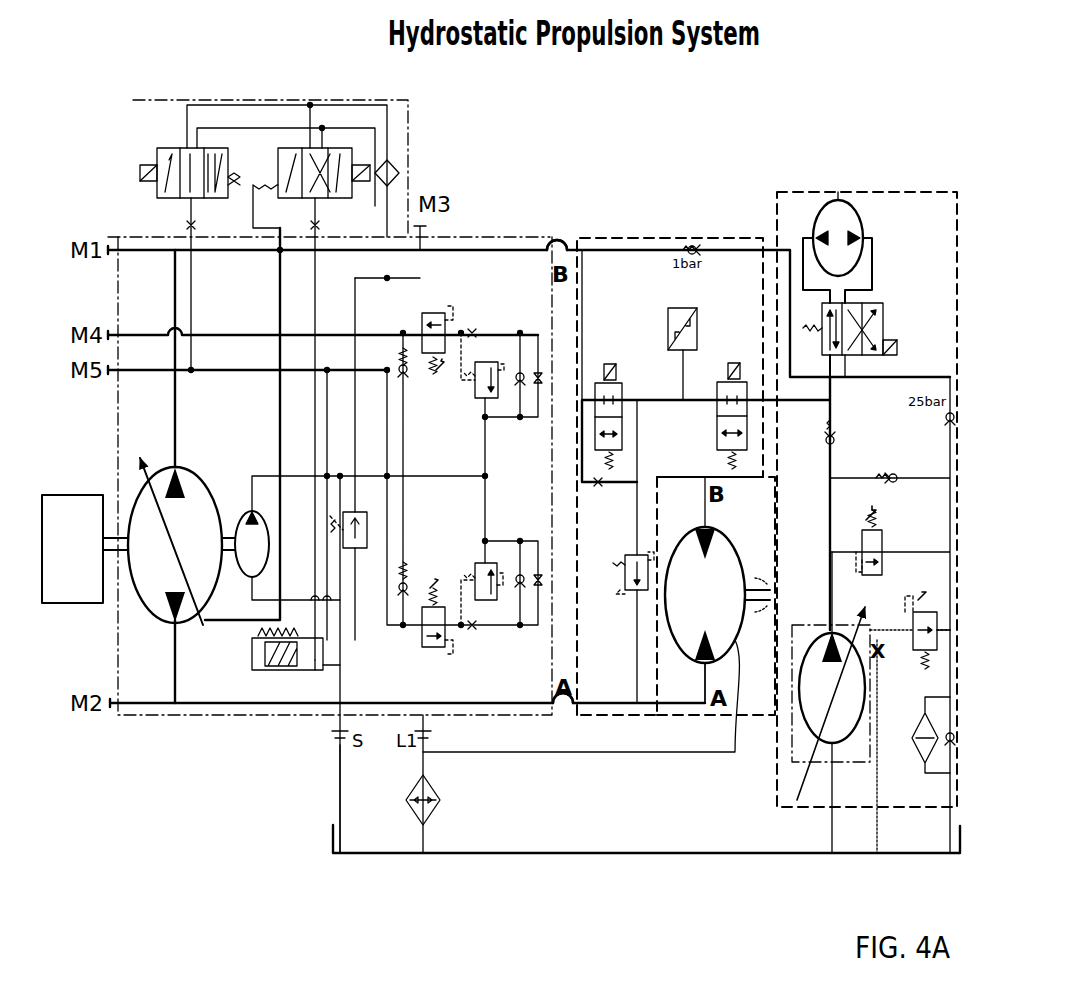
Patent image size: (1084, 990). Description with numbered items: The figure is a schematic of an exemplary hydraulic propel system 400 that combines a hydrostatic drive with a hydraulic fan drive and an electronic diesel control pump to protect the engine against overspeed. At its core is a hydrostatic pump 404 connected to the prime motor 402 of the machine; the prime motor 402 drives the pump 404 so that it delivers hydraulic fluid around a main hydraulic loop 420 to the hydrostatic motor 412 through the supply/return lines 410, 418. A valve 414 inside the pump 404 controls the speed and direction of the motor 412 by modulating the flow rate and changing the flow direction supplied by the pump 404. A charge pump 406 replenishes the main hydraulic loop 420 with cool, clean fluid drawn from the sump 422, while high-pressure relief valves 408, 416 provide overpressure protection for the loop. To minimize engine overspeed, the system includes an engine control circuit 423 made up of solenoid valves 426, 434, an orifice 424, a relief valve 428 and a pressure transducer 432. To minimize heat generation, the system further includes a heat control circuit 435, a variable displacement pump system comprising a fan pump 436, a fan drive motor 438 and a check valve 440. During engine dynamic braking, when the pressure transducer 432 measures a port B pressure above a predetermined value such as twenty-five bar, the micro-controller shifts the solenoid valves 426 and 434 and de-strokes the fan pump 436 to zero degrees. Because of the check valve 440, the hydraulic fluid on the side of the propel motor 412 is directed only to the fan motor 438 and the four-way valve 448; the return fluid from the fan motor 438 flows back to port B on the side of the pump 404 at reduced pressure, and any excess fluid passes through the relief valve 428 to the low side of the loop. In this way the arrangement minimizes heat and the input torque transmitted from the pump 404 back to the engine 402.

The hydraulic propel system 400 is at (776, 37).
The prime motor 402 is at (55, 605).
The hydrostatic pump 404 is at (155, 625).
The charge pump 406 is at (243, 583).
The high-pressure relief valve 408 is at (507, 605).
The supply/return line 410 is at (701, 447).
The hydrostatic motor 412 is at (690, 655).
The valve 414 is at (410, 165).
The high-pressure relief valve 416 is at (502, 347).
The supply/return line 418 is at (556, 238).
The main hydraulic loop 420 is at (258, 718).
The sump 422 is at (478, 856).
The engine control circuit 423 is at (627, 236).
The orifice 424 is at (598, 488).
The solenoid valve 426 is at (617, 378).
The relief valve 428 is at (624, 594).
The pressure transducer 432 is at (700, 302).
The solenoid valve 434 is at (735, 375).
The heat control circuit 435 is at (906, 190).
The fan pump 436 is at (797, 705).
The fan drive motor 438 is at (839, 197).
The check valve 440 is at (838, 436).
The 4-way valve 448 is at (886, 306).